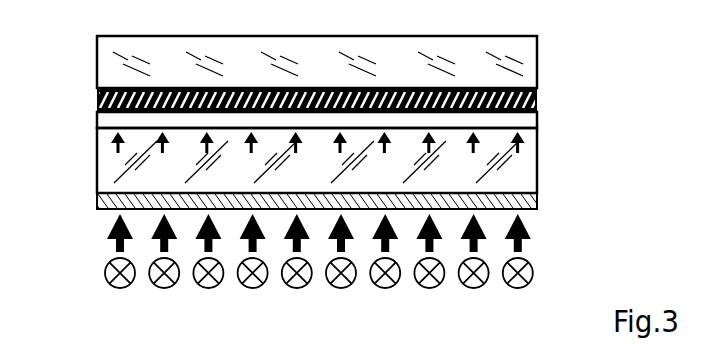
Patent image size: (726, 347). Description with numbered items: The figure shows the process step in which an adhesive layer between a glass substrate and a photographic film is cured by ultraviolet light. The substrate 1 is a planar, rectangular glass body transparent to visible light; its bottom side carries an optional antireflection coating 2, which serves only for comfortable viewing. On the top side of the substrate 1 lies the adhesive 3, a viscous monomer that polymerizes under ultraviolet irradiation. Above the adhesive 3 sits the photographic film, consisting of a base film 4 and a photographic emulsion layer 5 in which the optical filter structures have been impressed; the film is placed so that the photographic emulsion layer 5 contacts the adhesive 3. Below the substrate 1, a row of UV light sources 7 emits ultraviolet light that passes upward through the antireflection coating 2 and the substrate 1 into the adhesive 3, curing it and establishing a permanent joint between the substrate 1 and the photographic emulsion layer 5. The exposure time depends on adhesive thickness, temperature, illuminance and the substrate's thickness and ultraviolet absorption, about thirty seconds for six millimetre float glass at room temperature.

The substrate 1 is at (532, 178).
The antireflection coating 2 is at (97, 205).
The adhesive 3 is at (530, 120).
The base film 4 is at (530, 72).
The photographic emulsion layer 5 is at (97, 99).
The UV light sources 7 is at (552, 268).